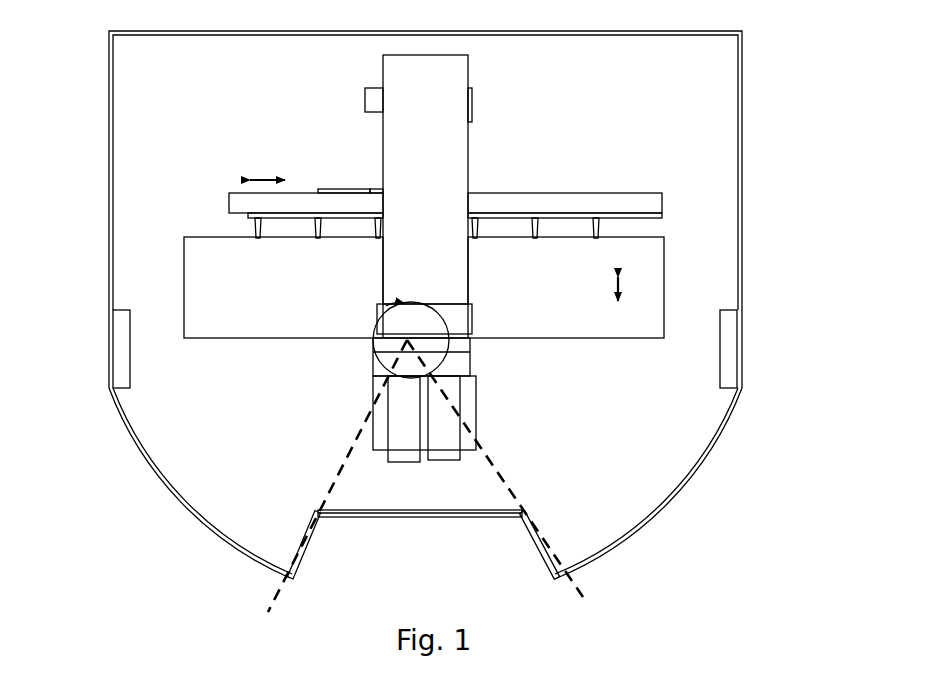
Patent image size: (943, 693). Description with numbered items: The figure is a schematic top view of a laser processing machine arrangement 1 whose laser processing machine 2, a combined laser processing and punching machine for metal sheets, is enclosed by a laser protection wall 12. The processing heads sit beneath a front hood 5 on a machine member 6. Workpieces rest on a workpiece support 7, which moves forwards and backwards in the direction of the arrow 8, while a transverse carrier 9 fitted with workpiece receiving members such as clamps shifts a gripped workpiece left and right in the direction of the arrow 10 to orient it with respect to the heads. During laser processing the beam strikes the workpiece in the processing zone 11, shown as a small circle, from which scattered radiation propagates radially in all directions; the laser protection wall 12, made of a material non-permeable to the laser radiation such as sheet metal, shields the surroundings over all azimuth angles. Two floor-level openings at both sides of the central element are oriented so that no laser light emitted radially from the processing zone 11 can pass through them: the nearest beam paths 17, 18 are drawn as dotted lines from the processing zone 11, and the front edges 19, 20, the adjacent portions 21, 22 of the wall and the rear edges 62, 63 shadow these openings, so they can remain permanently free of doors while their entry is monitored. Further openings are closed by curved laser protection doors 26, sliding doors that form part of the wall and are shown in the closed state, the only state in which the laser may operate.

The laser processing machine arrangement 1 is at (74, 104).
The laser processing machine 2 is at (562, 184).
The front hood 5 is at (462, 338).
The machine member 6 is at (452, 136).
The workpiece support 7 is at (238, 310).
The arrow 8 is at (626, 289).
The transverse carrier 9 is at (338, 201).
The arrow 10 is at (267, 170).
The processing zone 11 is at (409, 346).
The laser protection wall 12 is at (741, 212).
The beam path 17 is at (352, 451).
The beam path 18 is at (486, 452).
The front edge 19 is at (319, 505).
The front edge 20 is at (525, 505).
The adjacent portion 21 is at (339, 521).
The adjacent portion 22 is at (511, 521).
The laser protection door 26 is at (148, 477).
The rear edge 62 is at (291, 561).
The rear edge 63 is at (558, 561).